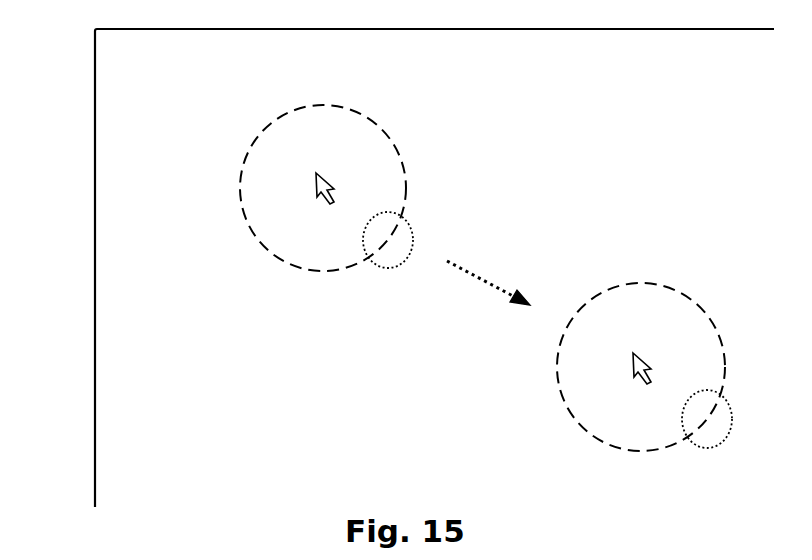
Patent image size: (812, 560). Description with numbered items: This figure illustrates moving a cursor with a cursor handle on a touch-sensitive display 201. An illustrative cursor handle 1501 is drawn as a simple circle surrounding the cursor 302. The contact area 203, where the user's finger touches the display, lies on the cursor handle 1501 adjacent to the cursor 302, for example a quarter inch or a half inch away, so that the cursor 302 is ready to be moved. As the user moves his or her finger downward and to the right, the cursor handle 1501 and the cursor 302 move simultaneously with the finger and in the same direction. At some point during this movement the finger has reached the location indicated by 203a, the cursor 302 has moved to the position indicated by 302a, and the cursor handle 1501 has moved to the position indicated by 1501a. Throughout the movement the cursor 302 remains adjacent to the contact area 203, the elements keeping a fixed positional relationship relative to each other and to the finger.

The touch-sensitive display 201 is at (94, 176).
The cursor handle 1501 is at (258, 241).
The cursor 302 is at (330, 204).
The contact area 203 is at (396, 269).
The cursor handle position 1501a is at (575, 419).
The cursor position 302a is at (647, 384).
The contact area location 203a is at (715, 447).